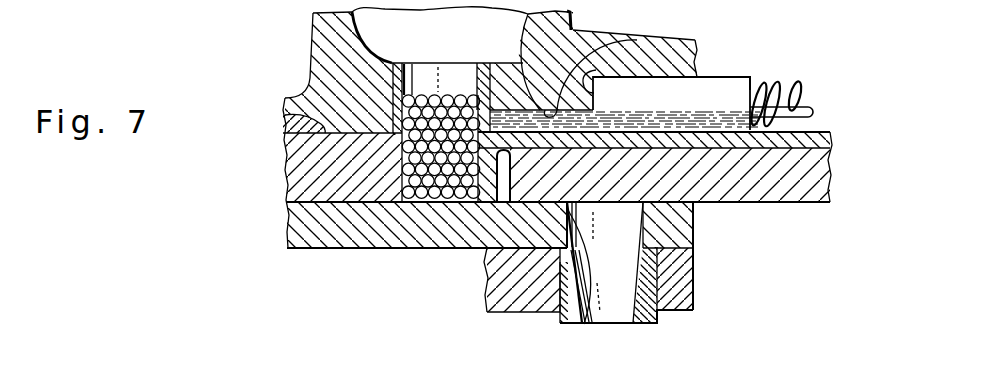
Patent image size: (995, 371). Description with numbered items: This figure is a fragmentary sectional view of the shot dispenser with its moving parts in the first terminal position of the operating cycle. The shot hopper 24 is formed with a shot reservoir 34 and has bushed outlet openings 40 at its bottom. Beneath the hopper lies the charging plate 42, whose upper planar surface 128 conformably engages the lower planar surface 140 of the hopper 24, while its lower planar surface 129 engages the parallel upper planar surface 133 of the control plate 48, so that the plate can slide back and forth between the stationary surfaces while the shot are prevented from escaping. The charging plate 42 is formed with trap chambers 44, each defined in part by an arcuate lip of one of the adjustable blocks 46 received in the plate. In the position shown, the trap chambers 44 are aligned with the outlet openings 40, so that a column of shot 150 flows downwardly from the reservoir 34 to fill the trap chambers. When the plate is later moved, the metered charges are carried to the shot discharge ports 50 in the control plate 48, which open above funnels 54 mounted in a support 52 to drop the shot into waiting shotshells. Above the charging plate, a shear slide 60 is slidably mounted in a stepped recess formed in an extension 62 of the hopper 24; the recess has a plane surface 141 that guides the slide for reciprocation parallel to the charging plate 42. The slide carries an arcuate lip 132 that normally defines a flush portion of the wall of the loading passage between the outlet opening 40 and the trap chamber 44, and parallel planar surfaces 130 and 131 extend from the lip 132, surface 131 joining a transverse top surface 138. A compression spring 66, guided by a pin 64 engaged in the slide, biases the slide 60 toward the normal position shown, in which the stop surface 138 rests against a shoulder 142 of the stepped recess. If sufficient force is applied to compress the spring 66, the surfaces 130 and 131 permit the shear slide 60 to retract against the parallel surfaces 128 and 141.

The shot hopper 24 is at (310, 45).
The shot reservoir 34 is at (456, 38).
The outlet openings 40 is at (408, 63).
The column of shot 150 is at (452, 98).
The arcuate lip 132 is at (485, 118).
The upper planar surface 128 is at (287, 113).
The lower planar surface 140 is at (342, 152).
The upper planar surface 133 is at (305, 202).
The lower planar surface 129 is at (325, 204).
The trap chambers 44 is at (402, 186).
The plane surface 141 is at (694, 42).
The planar surface 131 is at (573, 25).
The hopper extension 62 is at (577, 30).
The shoulder 142 is at (596, 90).
The top surface 138 is at (671, 103).
The shear slide 60 is at (758, 67).
The compression spring 66 is at (798, 82).
The pin 64 is at (812, 108).
The blocks 46 is at (843, 146).
The charging plate 42 is at (831, 194).
The planar surface 130 is at (466, 244).
The control plate 48 is at (694, 233).
The funnels 54 is at (658, 295).
The support 52 is at (692, 312).
The discharge ports 50 is at (586, 323).